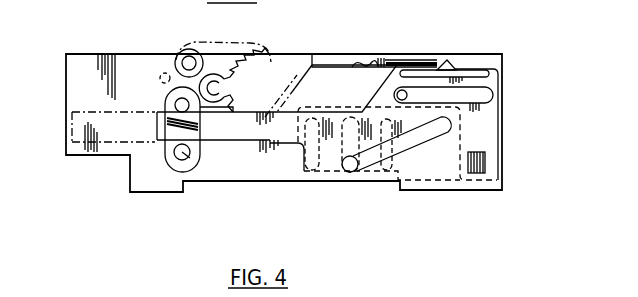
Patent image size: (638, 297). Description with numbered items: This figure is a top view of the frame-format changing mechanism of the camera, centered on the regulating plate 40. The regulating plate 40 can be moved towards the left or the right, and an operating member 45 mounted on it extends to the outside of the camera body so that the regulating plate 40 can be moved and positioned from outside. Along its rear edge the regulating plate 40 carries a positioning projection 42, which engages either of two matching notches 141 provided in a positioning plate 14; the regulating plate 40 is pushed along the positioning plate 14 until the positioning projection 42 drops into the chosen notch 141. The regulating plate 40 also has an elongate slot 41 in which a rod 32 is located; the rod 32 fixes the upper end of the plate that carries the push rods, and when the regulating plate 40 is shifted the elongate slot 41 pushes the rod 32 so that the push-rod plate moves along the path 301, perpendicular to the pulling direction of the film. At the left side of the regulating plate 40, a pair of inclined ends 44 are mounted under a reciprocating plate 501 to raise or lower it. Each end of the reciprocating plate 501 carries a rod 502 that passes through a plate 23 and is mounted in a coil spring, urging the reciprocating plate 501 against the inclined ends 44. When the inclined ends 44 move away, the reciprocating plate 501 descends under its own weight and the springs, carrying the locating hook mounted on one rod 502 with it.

The positioning plate 14 is at (417, 63).
The notch 141 is at (380, 60).
The positioning projection 42 is at (448, 62).
The path 301 is at (370, 95).
The regulating plate 40 is at (492, 130).
The operating member 45 is at (485, 160).
The plate 23 is at (263, 158).
The inclined ends 44 is at (237, 140).
The reciprocating plate 501 is at (173, 165).
The rod 502 is at (185, 158).
The rod 32 is at (350, 172).
The elongate slot 41 is at (436, 131).